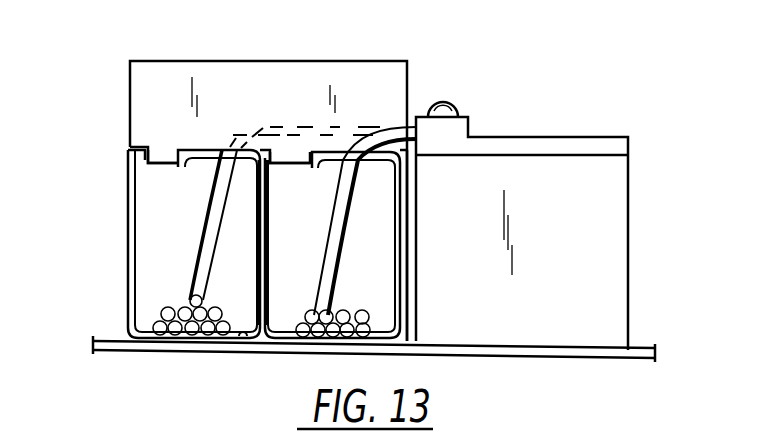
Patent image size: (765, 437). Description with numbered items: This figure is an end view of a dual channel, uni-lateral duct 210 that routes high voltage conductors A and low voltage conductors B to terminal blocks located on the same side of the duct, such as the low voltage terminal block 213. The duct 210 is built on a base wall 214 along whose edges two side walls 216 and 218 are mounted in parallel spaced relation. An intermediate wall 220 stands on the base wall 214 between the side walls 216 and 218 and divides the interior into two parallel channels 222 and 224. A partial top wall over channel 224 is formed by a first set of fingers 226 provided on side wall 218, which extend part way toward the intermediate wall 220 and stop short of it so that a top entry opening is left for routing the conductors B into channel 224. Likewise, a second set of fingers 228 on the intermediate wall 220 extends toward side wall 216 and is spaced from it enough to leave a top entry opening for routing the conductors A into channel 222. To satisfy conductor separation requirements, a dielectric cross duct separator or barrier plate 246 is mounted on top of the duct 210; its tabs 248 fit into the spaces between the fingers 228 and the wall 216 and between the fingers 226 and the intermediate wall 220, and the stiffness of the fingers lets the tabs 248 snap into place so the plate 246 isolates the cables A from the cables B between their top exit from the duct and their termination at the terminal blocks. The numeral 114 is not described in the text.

The base plate 114 is at (470, 352).
The dual channel uni-lateral duct 210 is at (112, 224).
The low voltage terminal block 213 is at (613, 104).
The base wall 214 is at (243, 338).
The side wall 216 is at (127, 293).
The side wall 218 is at (413, 306).
The intermediate wall 220 is at (270, 253).
The channel 222 is at (145, 223).
The channel 224 is at (385, 295).
The first set of fingers 226 is at (337, 147).
The second set of fingers 228 is at (217, 148).
The cross duct separator plate 246 is at (128, 63).
The tab 248 is at (160, 165).